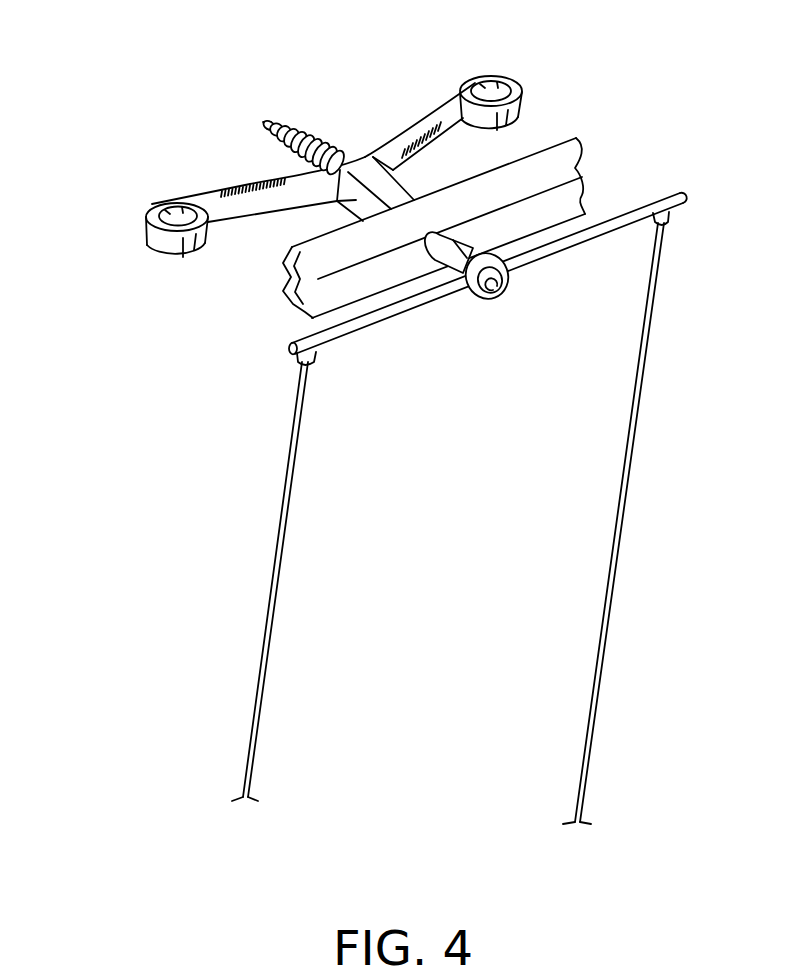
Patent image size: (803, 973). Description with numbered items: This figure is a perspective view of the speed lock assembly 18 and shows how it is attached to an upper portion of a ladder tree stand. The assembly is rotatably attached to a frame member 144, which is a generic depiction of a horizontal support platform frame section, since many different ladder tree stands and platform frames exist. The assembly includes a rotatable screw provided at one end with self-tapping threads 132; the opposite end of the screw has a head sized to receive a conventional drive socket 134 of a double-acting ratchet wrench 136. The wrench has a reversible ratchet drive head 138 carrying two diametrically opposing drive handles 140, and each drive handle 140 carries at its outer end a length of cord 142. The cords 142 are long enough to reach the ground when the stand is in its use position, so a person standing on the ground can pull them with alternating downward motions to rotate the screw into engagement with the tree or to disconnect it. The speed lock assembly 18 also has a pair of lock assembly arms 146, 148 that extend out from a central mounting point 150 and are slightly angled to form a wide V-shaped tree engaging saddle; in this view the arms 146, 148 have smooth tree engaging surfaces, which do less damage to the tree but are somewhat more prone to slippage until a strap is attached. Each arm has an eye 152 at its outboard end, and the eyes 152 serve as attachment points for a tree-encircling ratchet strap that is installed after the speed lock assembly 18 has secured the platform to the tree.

The speed lock assembly 18 is at (185, 306).
The self-tapping threads 132 is at (290, 127).
The drive socket 134 is at (486, 232).
The double-acting ratchet wrench 136 is at (470, 330).
The reversible ratchet drive head 138 is at (501, 286).
The drive handles 140 is at (587, 238).
The cords 142 is at (280, 570).
The frame member 144 is at (577, 152).
The lock assembly arm 146 is at (412, 122).
The lock assembly arm 148 is at (220, 200).
The central mounting point 150 is at (356, 201).
The eye 152 is at (160, 212).